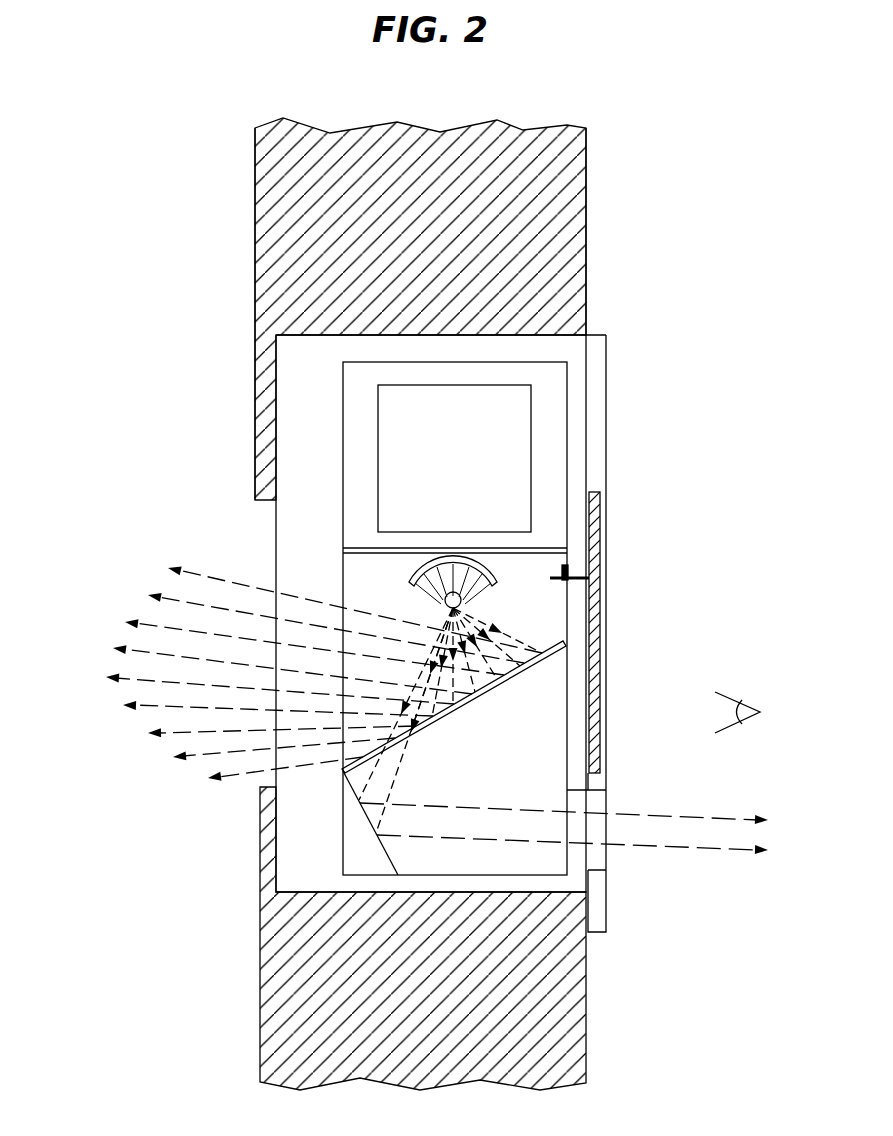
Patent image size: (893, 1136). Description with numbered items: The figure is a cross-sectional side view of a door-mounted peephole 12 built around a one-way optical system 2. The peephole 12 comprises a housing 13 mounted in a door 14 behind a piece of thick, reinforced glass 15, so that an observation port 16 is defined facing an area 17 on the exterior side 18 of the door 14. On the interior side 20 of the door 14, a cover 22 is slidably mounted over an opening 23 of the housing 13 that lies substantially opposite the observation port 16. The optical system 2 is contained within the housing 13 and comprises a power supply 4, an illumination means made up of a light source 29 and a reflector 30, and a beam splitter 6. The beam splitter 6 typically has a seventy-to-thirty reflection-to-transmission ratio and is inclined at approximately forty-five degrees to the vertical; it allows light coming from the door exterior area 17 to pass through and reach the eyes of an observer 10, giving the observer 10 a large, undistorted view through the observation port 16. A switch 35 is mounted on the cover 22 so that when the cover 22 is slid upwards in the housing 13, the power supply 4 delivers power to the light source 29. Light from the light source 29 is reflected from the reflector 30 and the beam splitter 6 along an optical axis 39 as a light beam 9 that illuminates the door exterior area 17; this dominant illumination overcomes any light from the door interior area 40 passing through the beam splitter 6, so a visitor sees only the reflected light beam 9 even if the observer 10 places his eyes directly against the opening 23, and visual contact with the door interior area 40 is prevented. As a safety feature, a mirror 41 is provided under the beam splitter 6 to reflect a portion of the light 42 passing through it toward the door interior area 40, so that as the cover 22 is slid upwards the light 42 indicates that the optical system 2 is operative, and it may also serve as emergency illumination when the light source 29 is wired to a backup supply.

The optical system 2 is at (556, 674).
The power supply 4 is at (531, 433).
The beam splitter 6 is at (562, 636).
The light beam 9 is at (158, 622).
The observer 10 is at (757, 705).
The peephole 12 is at (705, 311).
The housing 13 is at (567, 400).
The door 14 is at (572, 210).
The glass 15 is at (316, 412).
The observation port 16 is at (250, 516).
The area 17 is at (40, 494).
The exterior side 18 is at (255, 170).
The interior side 20 is at (588, 165).
The cover 22 is at (594, 505).
The opening 23 is at (606, 790).
The light source 29 is at (444, 600).
The reflector 30 is at (498, 580).
The switch 35 is at (580, 570).
The optical axis 39 is at (128, 683).
The door interior area 40 is at (808, 485).
The mirror 41 is at (388, 860).
The light 42 is at (705, 818).